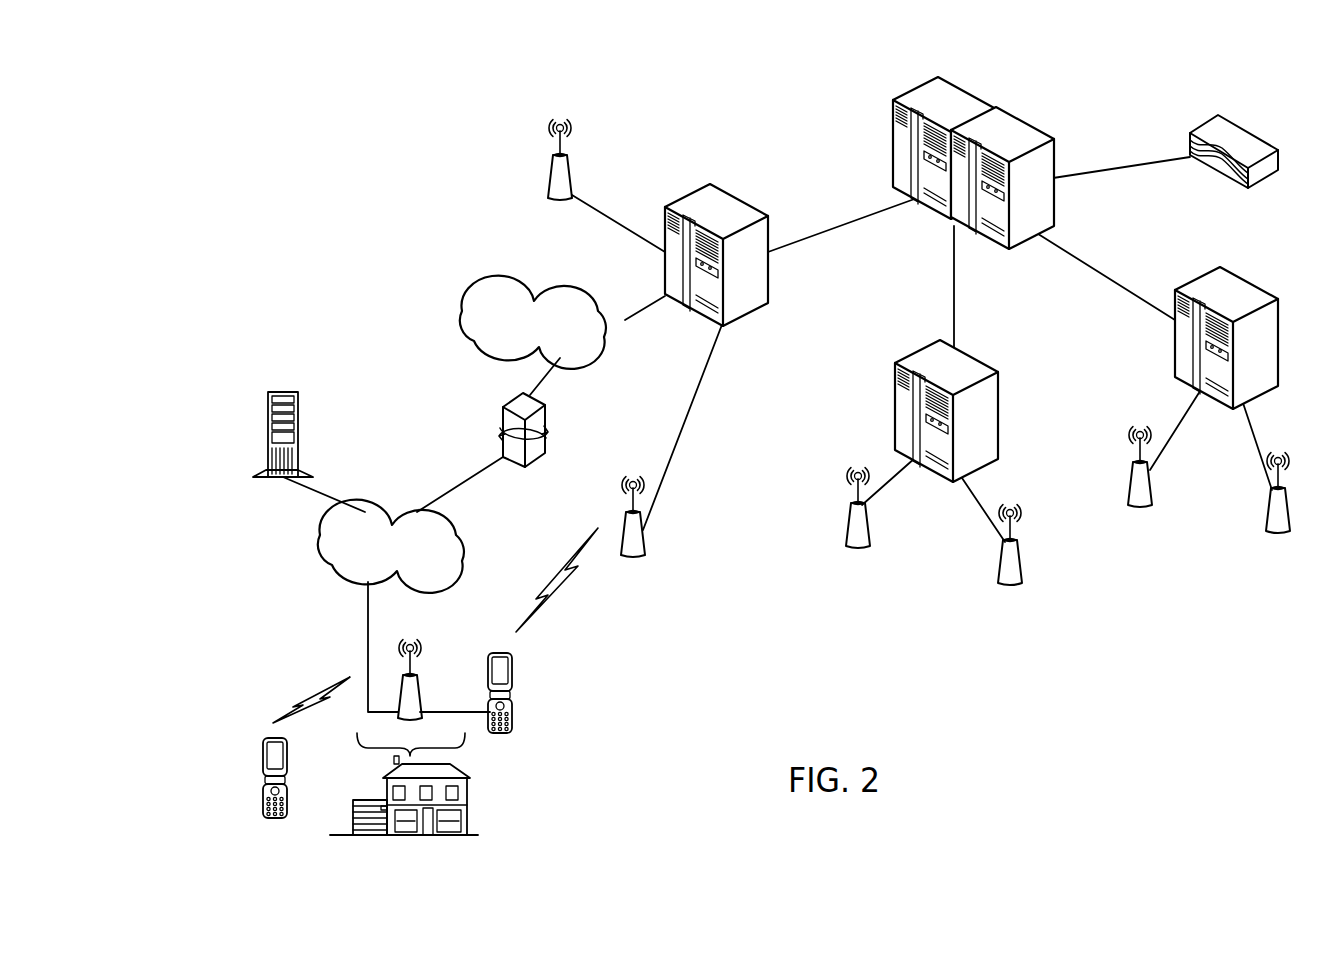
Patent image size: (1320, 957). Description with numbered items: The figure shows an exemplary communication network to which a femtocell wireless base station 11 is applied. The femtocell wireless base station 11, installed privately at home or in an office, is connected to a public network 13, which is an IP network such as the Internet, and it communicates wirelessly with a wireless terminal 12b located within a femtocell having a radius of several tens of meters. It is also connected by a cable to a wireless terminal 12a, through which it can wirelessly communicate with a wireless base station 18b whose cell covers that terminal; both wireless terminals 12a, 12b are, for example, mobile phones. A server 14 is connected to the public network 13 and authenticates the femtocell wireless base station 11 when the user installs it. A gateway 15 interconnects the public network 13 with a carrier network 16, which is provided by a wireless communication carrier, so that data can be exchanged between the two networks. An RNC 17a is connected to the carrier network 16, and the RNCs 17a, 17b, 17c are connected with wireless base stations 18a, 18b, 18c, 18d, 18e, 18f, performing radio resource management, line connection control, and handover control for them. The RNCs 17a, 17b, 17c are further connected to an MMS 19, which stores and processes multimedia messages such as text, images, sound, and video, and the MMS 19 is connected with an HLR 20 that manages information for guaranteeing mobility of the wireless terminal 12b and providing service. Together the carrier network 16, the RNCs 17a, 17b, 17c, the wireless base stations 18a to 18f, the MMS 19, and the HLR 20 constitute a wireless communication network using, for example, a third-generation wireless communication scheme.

The femtocell wireless base station 11 is at (418, 685).
The wireless terminal 12a is at (512, 690).
The wireless terminal 12b is at (263, 776).
The public network 13 is at (392, 512).
The server 14 is at (298, 415).
The gateway 15 is at (545, 415).
The carrier network 16 is at (535, 288).
The RNC 17a is at (710, 183).
The RNC 17b is at (968, 355).
The RNC 17c is at (1220, 268).
The wireless base station 18a is at (553, 166).
The wireless base station 18b is at (635, 559).
The wireless base station 18c is at (861, 550).
The wireless base station 18d is at (1012, 587).
The wireless base station 18e is at (1142, 509).
The wireless base station 18f is at (1278, 535).
The MMS 19 is at (1013, 113).
The HLR 20 is at (1246, 126).